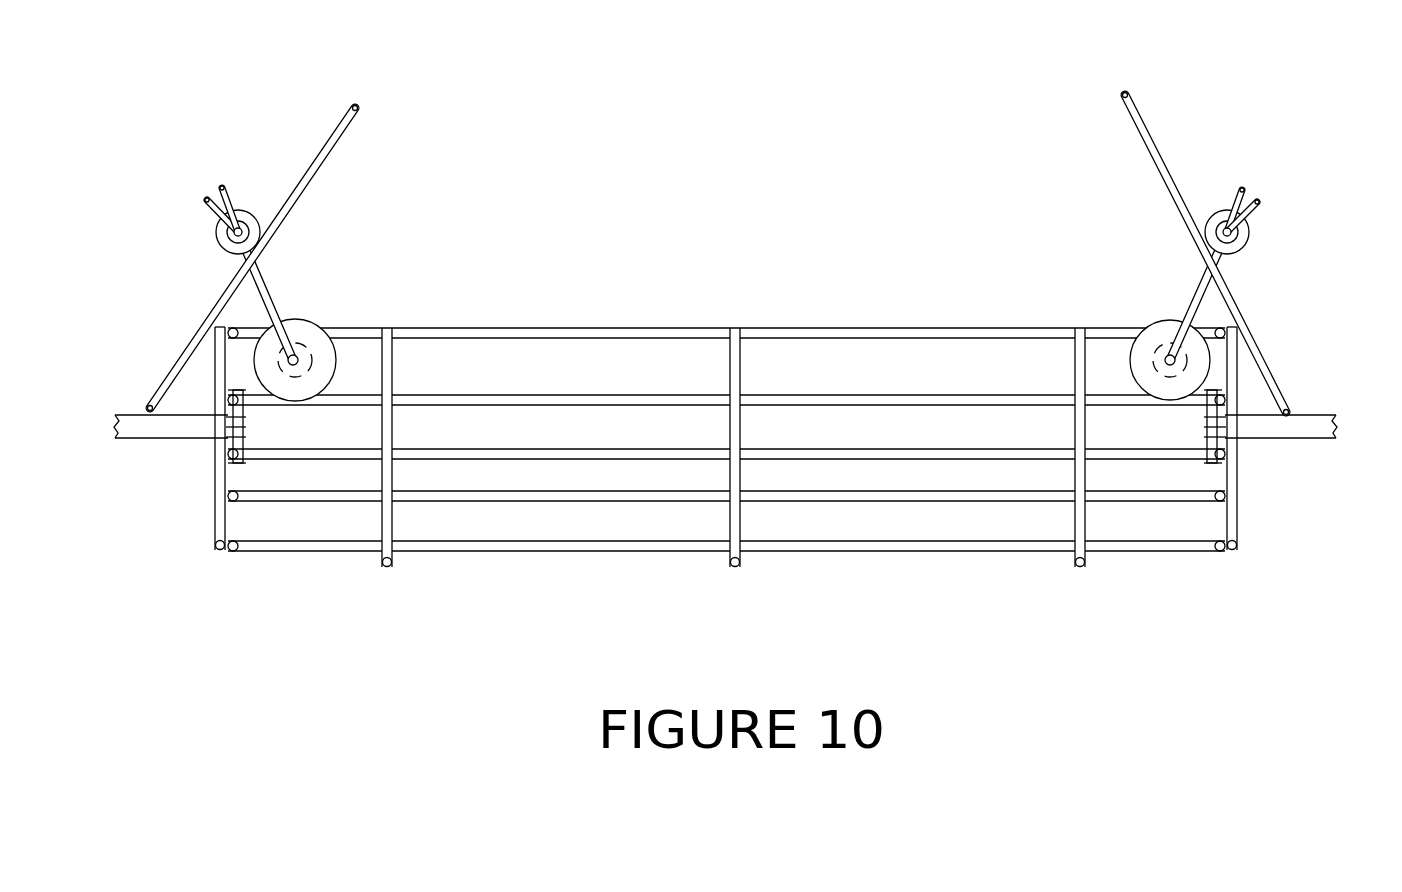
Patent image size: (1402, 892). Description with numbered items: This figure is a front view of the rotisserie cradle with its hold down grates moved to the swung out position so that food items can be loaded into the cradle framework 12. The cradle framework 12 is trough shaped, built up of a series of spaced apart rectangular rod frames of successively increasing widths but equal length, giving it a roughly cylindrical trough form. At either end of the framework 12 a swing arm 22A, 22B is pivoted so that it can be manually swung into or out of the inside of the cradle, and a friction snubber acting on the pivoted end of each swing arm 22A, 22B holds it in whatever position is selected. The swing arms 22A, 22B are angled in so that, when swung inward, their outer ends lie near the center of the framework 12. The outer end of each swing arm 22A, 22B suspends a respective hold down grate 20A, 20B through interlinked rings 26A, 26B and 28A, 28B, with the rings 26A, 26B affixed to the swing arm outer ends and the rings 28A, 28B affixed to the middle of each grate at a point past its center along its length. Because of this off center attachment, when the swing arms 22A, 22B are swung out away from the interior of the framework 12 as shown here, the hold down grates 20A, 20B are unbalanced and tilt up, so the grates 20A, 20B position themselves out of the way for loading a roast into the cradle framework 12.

The cradle framework 12 is at (708, 327).
The hold down grate 20A is at (313, 160).
The hold down grate 20B is at (1160, 140).
The swing arm 22A is at (277, 295).
The swing arm 22B is at (1195, 290).
The ring 26A is at (202, 198).
The ring 26B is at (1262, 202).
The ring 28A is at (217, 232).
The ring 28B is at (1248, 242).